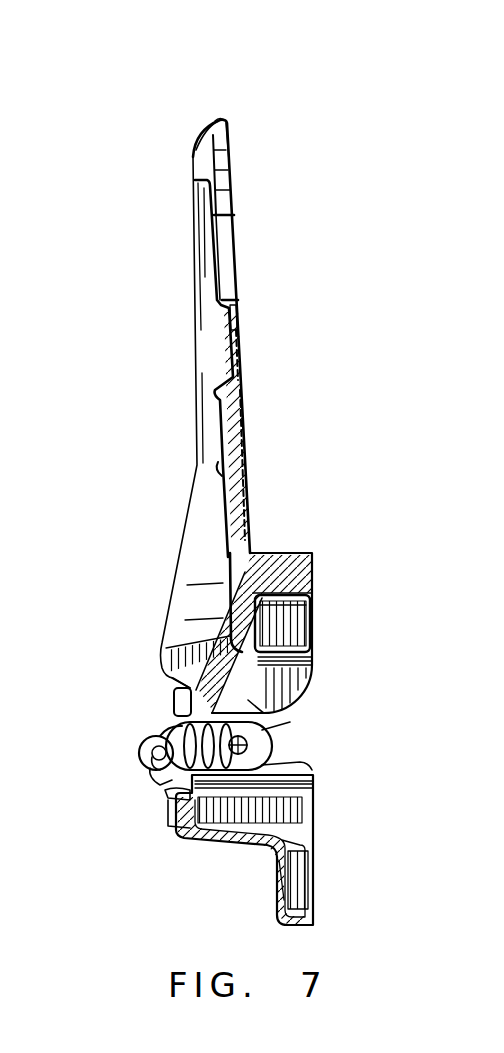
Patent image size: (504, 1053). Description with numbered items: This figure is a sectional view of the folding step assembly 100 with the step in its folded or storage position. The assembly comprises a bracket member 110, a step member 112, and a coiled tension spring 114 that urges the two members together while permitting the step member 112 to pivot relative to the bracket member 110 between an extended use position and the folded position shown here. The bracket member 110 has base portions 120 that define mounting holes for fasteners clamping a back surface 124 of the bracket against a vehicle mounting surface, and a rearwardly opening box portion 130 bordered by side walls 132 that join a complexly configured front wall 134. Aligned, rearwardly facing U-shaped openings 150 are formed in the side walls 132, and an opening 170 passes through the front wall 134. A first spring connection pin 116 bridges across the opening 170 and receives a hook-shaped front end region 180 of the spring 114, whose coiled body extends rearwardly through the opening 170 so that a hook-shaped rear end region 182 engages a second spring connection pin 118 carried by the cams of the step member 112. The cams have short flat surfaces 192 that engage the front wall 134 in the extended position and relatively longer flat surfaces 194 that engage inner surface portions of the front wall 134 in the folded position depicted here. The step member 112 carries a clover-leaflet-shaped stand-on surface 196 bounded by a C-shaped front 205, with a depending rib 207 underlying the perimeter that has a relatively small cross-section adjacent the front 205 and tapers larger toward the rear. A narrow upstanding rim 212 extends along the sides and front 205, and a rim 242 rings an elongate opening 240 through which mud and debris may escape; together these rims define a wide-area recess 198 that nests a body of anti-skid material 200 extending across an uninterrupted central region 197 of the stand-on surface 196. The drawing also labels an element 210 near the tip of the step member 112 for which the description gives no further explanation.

The folding step assembly 100 is at (290, 98).
The bracket member 110 is at (288, 548).
The step member 112 is at (193, 296).
The coiled tension spring 114 is at (175, 814).
The first spring connection pin 116 is at (162, 792).
The second spring connection pin 118 is at (280, 719).
The base portions 120 is at (279, 882).
The back surface 124 is at (312, 603).
The box portion 130 is at (175, 700).
The side walls 132 is at (305, 675).
The front wall 134 is at (148, 736).
The U-shaped openings 150 is at (288, 703).
The opening 170 is at (185, 716).
The hook-shaped front end region 180 is at (150, 765).
The hook-shaped rear end region 182 is at (285, 742).
The short flat surfaces 192 is at (172, 650).
The longer flat surfaces 194 is at (152, 753).
The stand-on surface 196 is at (232, 212).
The central region 197 is at (255, 415).
The wide-area recess 198 is at (250, 372).
The anti-skid material 200 is at (250, 330).
The C-shaped front 205 is at (218, 120).
The depending rib 207 is at (193, 176).
The tip edge 210 is at (228, 125).
The rim 212 is at (222, 119).
The elongate opening 240 is at (235, 233).
The rim 242 is at (236, 218).